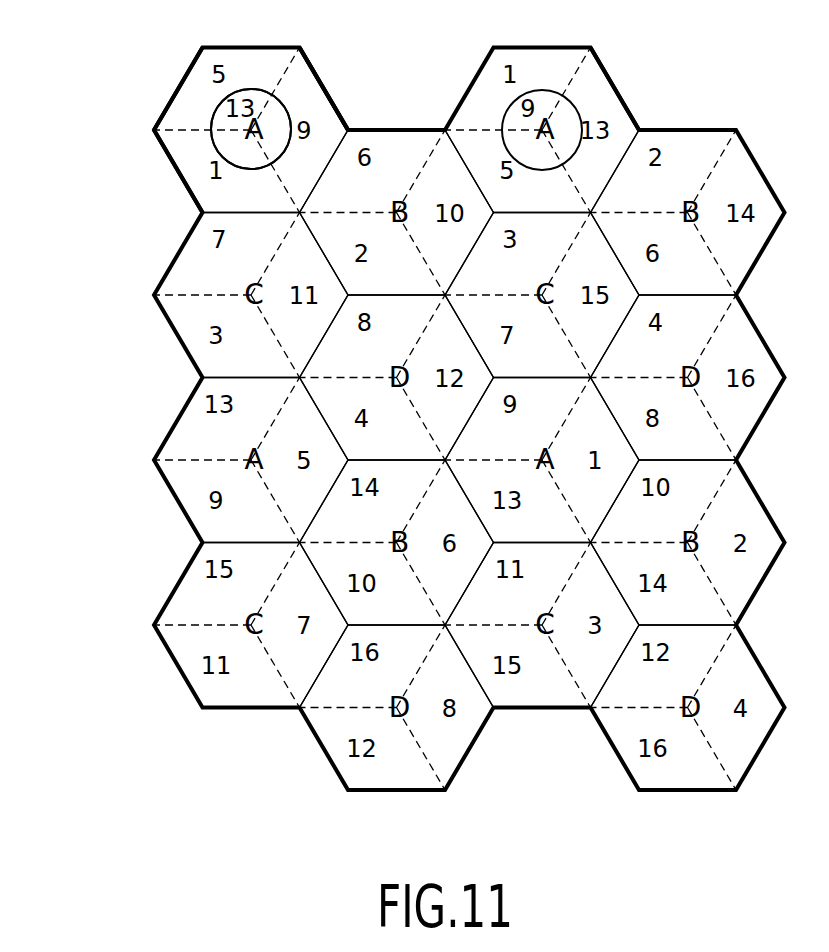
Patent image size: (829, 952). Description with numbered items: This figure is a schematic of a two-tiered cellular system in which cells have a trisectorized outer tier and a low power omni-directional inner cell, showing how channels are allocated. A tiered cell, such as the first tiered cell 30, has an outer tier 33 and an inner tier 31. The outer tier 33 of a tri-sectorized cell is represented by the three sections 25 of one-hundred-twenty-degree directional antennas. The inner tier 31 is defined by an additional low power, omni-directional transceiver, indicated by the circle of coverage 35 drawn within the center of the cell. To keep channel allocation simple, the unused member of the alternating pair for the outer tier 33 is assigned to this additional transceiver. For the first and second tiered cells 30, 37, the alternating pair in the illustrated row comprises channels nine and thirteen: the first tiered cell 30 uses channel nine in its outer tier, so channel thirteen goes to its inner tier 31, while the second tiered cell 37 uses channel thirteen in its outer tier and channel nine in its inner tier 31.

The section 25 is at (185, 95).
The first tiered cell 30 is at (154, 128).
The inner tier 31 is at (278, 122).
The outer tier 33 is at (324, 56).
The circle of coverage 35 is at (243, 168).
The second tiered cell 37 is at (626, 108).